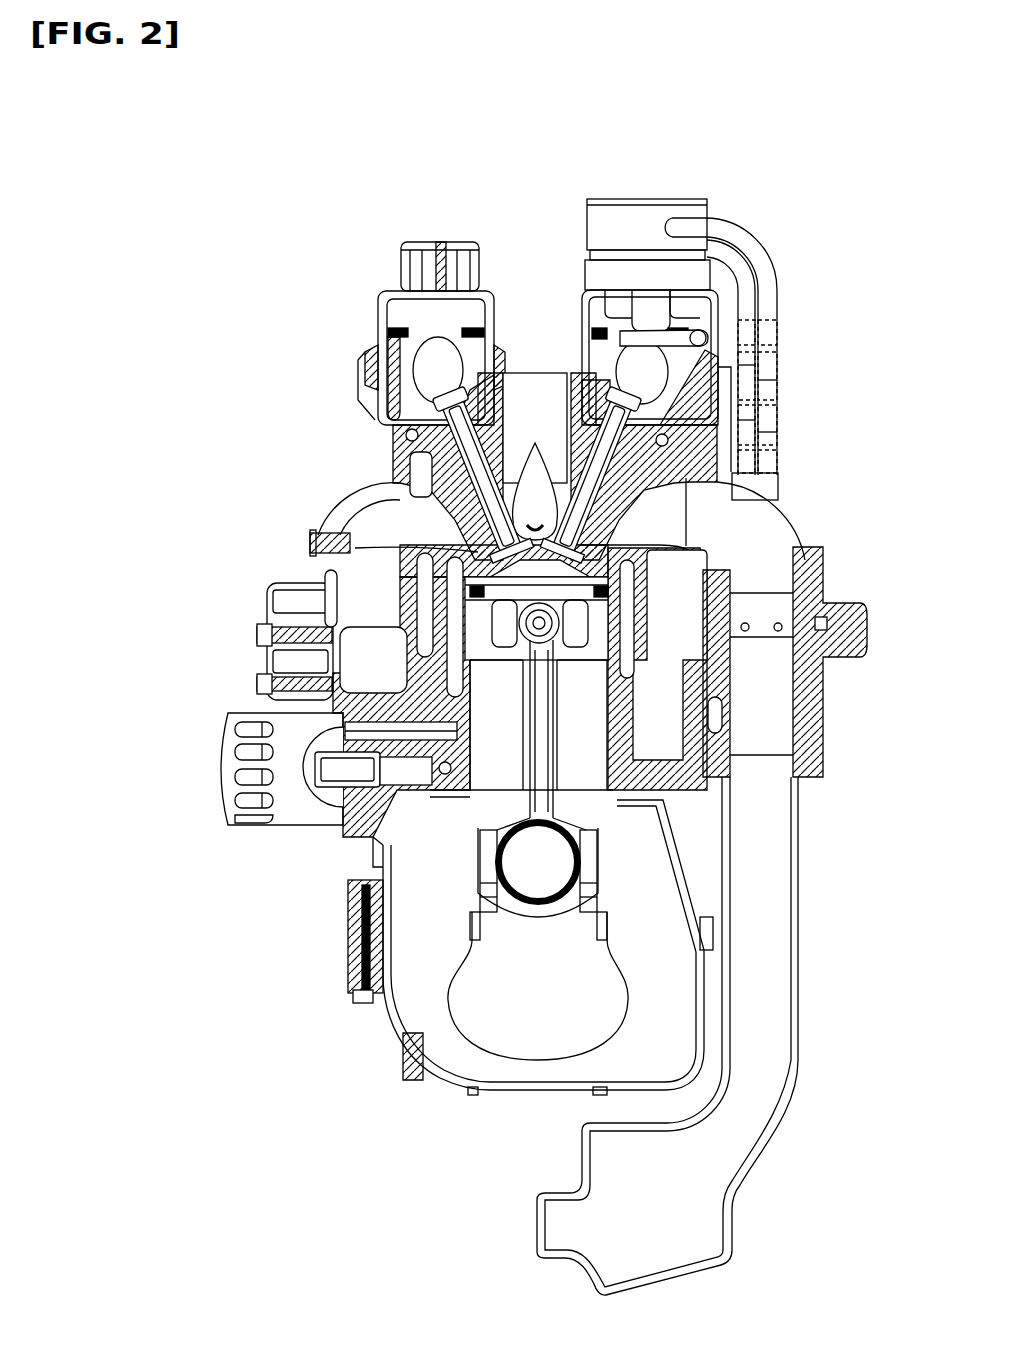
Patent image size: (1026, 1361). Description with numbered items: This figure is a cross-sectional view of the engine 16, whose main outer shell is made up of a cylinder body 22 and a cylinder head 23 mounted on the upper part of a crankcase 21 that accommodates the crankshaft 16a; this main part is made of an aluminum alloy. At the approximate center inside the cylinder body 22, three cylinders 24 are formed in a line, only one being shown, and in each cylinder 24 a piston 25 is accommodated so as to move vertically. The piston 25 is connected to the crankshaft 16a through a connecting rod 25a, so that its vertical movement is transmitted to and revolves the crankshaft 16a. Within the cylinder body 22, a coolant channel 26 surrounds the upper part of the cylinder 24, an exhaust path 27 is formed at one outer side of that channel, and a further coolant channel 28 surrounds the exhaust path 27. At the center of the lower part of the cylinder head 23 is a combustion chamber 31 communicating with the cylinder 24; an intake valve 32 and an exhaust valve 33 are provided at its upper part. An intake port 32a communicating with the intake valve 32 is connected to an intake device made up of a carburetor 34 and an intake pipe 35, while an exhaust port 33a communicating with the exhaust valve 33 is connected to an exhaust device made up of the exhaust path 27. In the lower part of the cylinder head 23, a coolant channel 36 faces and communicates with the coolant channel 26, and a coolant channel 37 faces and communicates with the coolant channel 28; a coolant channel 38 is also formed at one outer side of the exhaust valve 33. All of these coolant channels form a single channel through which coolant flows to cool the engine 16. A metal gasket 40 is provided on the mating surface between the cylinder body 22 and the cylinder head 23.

The engine 16 is at (857, 382).
The crankshaft 16a is at (575, 858).
The crankcase 21 is at (402, 1033).
The cylinder body 22 is at (422, 787).
The cylinder head 23 is at (397, 436).
The cylinder 24 is at (620, 718).
The piston 25 is at (575, 640).
The connecting rod 25a is at (551, 778).
The coolant channel 26 is at (455, 640).
The exhaust path 27 is at (330, 652).
The coolant channel 28 is at (368, 620).
The combustion chamber 31 is at (520, 585).
The intake valve 32 is at (583, 530).
The intake port 32a is at (690, 530).
The exhaust valve 33 is at (480, 528).
The exhaust port 33a is at (393, 530).
The carburetor 34 is at (830, 702).
The intake pipe 35 is at (803, 817).
The coolant channel 36 is at (535, 500).
The coolant channel 37 is at (415, 565).
The coolant channel 38 is at (400, 462).
The metal gasket 40 is at (440, 590).